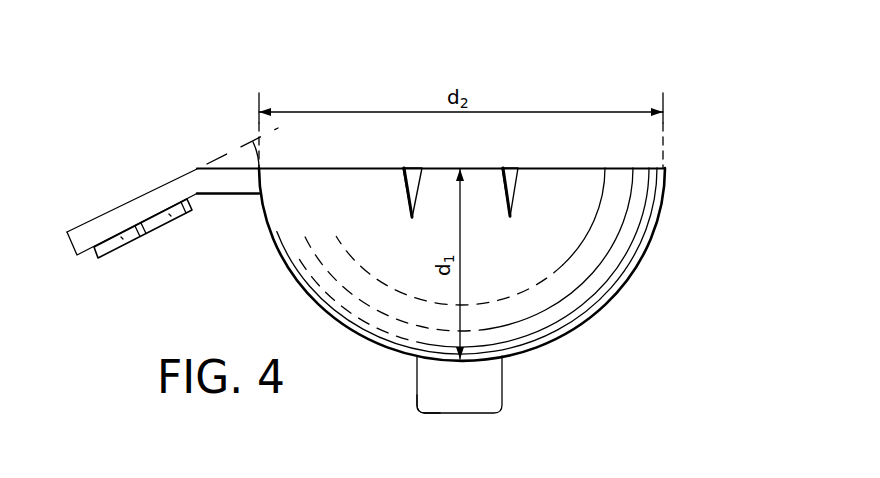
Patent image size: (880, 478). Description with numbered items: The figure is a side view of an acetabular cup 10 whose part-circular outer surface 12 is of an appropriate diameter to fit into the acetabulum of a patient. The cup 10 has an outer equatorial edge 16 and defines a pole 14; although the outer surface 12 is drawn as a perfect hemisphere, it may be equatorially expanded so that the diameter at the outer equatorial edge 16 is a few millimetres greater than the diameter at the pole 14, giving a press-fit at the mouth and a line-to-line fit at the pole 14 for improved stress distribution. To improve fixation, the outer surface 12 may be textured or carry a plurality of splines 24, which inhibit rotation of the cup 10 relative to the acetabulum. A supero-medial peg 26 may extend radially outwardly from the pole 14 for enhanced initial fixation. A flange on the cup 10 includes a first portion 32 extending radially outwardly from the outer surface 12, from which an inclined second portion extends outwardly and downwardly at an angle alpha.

The acetabular cup 10 is at (744, 134).
The outer surface 12 is at (621, 287).
The pole 14 is at (462, 362).
The outer equatorial edge 16 is at (665, 170).
The splines 24 is at (515, 198).
The supero-medial peg 26 is at (417, 403).
The first portion 32 is at (238, 195).